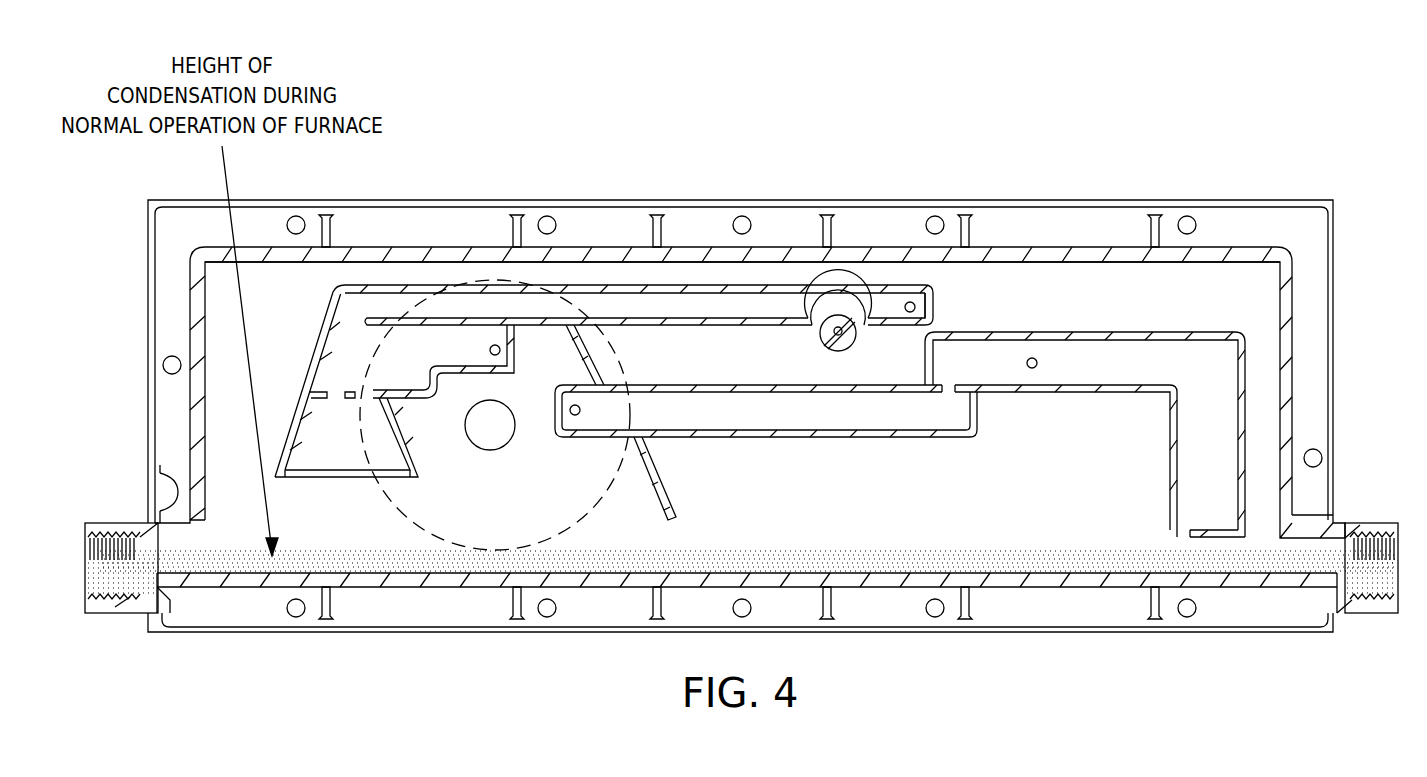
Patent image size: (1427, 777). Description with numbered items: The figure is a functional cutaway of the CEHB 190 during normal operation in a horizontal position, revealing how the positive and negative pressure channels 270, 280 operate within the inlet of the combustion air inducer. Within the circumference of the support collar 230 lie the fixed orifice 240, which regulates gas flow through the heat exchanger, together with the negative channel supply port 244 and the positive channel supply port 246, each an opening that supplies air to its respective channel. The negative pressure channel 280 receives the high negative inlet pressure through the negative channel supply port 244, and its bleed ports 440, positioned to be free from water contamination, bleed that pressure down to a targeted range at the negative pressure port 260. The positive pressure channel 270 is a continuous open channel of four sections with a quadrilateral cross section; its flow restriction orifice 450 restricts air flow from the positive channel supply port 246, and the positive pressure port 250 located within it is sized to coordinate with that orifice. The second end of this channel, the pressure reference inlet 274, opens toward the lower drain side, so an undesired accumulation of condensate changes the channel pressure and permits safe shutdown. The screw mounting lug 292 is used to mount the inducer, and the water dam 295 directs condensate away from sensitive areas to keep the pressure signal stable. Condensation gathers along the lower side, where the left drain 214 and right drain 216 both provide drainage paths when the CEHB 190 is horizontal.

The CEHB 190 is at (1037, 146).
The left drain 214 is at (108, 616).
The right drain 216 is at (1382, 616).
The support collar 230 is at (378, 502).
The fixed orifice 240 is at (493, 452).
The negative channel supply port 244 is at (488, 353).
The positive channel supply port 246 is at (578, 418).
The positive pressure port 250 is at (1040, 364).
The negative pressure port 260 is at (920, 308).
The positive pressure channel 270 is at (1092, 396).
The pressure reference inlet 274 is at (1190, 542).
The negative pressure channel 280 is at (328, 330).
The screw mounting lug 292 is at (822, 342).
The water dam 295 is at (660, 487).
The bleed ports 440 is at (335, 400).
The flow restriction orifice 450 is at (945, 400).